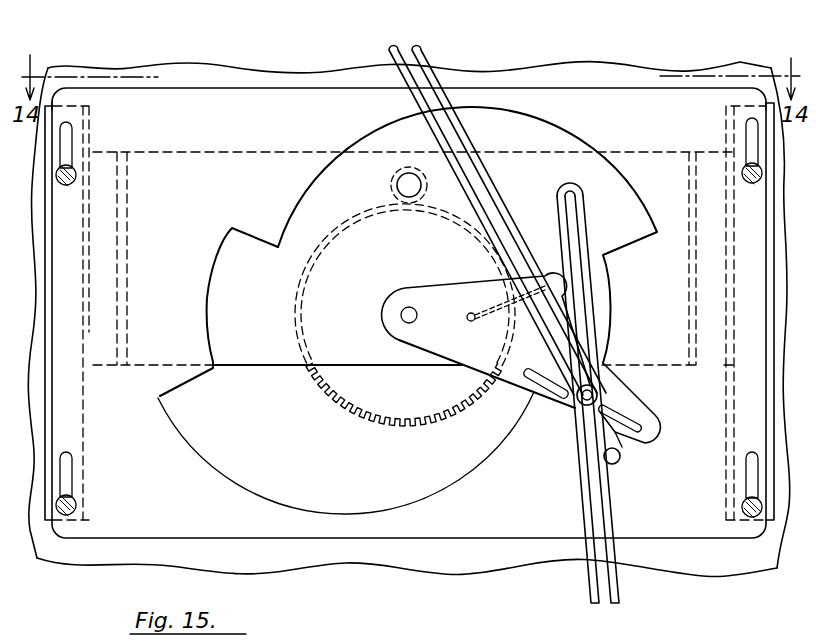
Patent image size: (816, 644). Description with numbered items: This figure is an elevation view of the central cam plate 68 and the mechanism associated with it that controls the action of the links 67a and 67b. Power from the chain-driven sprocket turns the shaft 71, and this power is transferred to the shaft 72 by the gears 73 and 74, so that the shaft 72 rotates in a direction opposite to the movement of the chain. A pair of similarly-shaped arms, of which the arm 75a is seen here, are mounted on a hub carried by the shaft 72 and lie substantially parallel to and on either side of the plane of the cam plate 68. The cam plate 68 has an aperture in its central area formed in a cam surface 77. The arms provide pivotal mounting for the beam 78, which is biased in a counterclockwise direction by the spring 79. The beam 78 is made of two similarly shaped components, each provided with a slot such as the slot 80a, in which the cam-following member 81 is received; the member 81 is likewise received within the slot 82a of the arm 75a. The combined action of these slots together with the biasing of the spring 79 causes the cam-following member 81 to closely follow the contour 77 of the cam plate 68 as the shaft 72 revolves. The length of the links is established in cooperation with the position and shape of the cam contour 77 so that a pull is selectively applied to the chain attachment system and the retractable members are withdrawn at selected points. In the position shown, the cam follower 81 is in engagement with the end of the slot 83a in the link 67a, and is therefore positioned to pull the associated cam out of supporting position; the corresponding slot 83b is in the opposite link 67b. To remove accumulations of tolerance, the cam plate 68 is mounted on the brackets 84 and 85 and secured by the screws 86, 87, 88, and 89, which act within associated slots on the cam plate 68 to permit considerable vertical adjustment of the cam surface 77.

The central cam plate 68 is at (566, 100).
The bracket 84 is at (52, 100).
The bracket 85 is at (766, 100).
The screw 86 is at (73, 170).
The screw 87 is at (75, 504).
The screw 88 is at (742, 505).
The screw 89 is at (743, 166).
The cam surface 77 is at (217, 260).
The shaft 71 is at (405, 177).
The gear 73 is at (391, 175).
The gear 74 is at (352, 231).
The shaft 72 is at (405, 308).
The arm 75a is at (469, 270).
The spring 79 is at (493, 302).
The slot 82a is at (556, 396).
The link 67a is at (490, 35).
The slot 83a is at (440, 97).
The link 67b is at (556, 212).
The slot 83b is at (643, 232).
The cam-following member 81 is at (598, 394).
The slot 80a is at (618, 441).
The beam 78 is at (620, 455).